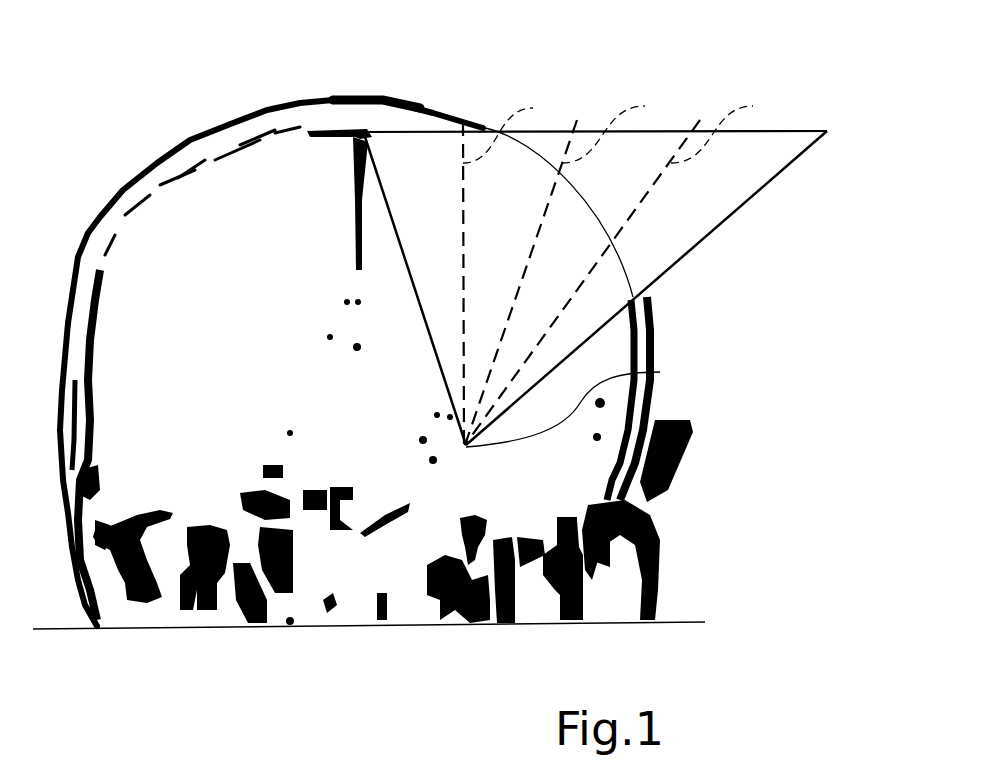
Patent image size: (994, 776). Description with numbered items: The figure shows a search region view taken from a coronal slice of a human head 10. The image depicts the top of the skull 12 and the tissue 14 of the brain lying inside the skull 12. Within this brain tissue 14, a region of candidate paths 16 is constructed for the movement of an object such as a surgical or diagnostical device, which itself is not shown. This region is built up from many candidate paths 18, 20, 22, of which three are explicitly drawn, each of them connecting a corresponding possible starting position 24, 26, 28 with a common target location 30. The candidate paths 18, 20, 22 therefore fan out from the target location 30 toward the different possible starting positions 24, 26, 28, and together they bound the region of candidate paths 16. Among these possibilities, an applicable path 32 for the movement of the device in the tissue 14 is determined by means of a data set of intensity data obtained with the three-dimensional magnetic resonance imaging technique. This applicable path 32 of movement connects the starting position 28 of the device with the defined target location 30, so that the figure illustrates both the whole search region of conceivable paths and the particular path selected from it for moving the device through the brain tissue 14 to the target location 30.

The human head 10 is at (205, 80).
The skull 12 is at (270, 108).
The tissue 14 is at (312, 389).
The region of candidate paths 16 is at (703, 237).
The candidate path 18 is at (518, 131).
The candidate path 20 is at (623, 131).
The candidate path 22 is at (752, 131).
The possible starting position 24 is at (467, 120).
The possible starting position 26 is at (580, 120).
The possible starting position 28 is at (703, 120).
The target location 30 is at (660, 372).
The applicable path 32 is at (593, 131).